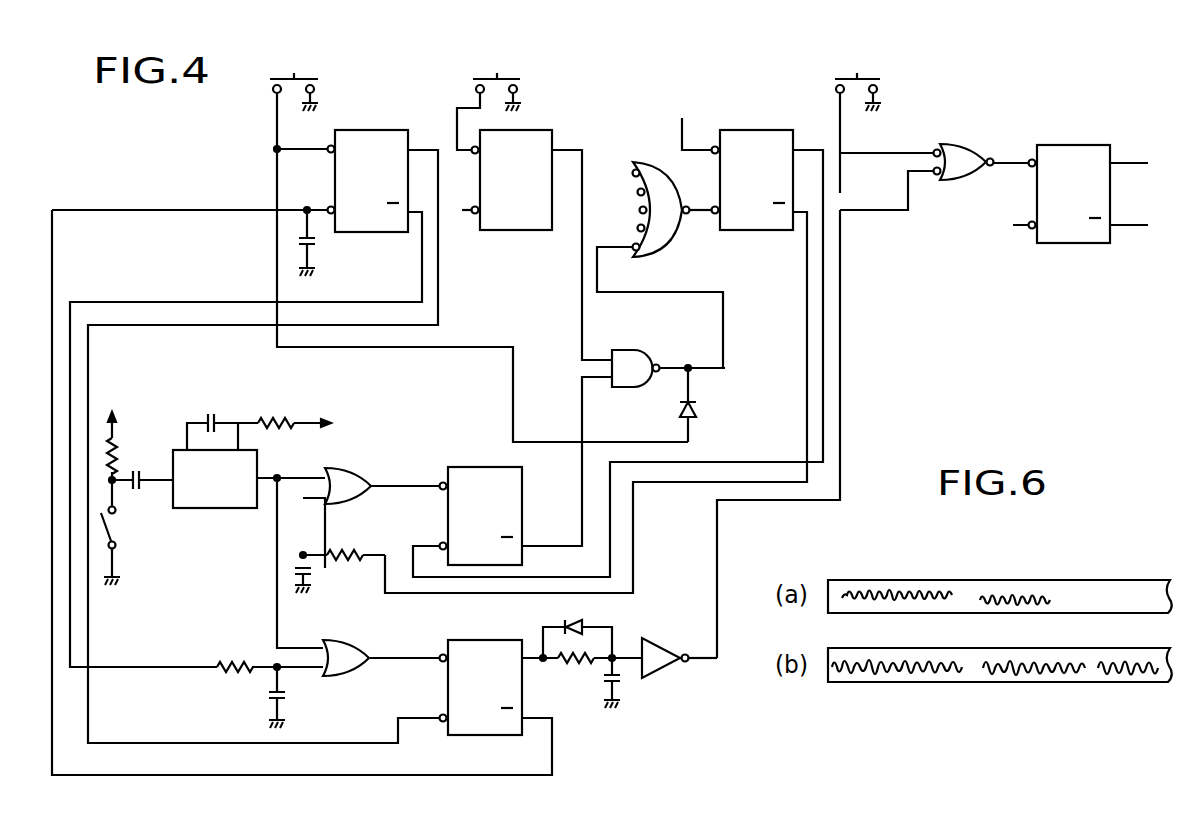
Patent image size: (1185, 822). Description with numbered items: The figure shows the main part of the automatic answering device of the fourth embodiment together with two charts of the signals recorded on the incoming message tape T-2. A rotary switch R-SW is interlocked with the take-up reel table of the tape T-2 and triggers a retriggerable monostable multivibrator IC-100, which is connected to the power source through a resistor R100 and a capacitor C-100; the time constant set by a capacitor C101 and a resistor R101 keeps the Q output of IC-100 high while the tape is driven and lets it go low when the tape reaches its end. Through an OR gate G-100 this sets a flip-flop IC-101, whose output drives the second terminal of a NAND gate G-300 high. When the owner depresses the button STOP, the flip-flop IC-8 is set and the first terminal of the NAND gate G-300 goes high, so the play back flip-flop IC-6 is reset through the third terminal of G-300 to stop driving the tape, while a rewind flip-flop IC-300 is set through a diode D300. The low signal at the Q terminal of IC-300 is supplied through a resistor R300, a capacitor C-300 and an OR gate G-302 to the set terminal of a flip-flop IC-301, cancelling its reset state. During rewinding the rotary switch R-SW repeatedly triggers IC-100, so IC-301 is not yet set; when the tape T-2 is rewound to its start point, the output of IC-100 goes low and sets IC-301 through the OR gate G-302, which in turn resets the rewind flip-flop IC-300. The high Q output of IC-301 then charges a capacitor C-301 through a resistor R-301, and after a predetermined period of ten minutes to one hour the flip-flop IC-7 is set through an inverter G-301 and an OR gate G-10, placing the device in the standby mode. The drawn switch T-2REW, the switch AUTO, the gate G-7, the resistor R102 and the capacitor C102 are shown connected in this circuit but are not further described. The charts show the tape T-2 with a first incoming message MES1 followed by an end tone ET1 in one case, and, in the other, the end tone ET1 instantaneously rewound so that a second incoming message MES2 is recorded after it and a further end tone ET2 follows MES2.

In FIG. 4, the rewind switch T-2REW is at (295, 82).
In FIG. 4, the stop button STOP is at (491, 101).
In FIG. 4, the auto switch AUTO is at (858, 82).
In FIG. 4, the rewind flip-flop IC-300 is at (341, 203).
In FIG. 4, the flip-flop IC-8 is at (507, 180).
In FIG. 4, the NOR gate G-7 is at (661, 199).
In FIG. 4, the play back flip-flop IC-6 is at (737, 174).
In FIG. 4, the OR gate G-10 is at (974, 161).
In FIG. 4, the flip-flop IC-7 is at (1080, 194).
In FIG. 4, the NAND gate G-300 is at (657, 364).
In FIG. 4, the diode D300 is at (716, 405).
In FIG. 4, the resistor R100 is at (130, 450).
In FIG. 4, the capacitor C-100 is at (141, 492).
In FIG. 4, the rotary switch R-SW is at (142, 546).
In FIG. 4, the retriggerable monostable multivibrator IC-100 is at (215, 479).
In FIG. 4, the capacitor C101 is at (211, 420).
In FIG. 4, the resistor R101 is at (301, 414).
In FIG. 4, the OR gate G-100 is at (329, 483).
In FIG. 4, the resistor R102 is at (342, 544).
In FIG. 4, the capacitor C102 is at (329, 588).
In FIG. 4, the flip-flop IC-101 is at (481, 516).
In FIG. 4, the resistor R300 is at (235, 655).
In FIG. 4, the capacitor C-300 is at (314, 696).
In FIG. 4, the OR gate G-302 is at (348, 652).
In FIG. 4, the flip-flop IC-301 is at (481, 687).
In FIG. 4, the resistor R-301 is at (582, 656).
In FIG. 4, the capacitor C-301 is at (643, 683).
In FIG. 4, the inverter G-301 is at (677, 647).
In FIG. 6, the incoming message tape T-2 is at (1152, 580).
In FIG. 6, the first incoming message MES1 is at (893, 595).
In FIG. 6, the end tone ET1 is at (1023, 595).
In FIG. 6, the second incoming message MES2 is at (1018, 667).
In FIG. 6, the end tone ET2 is at (1123, 667).